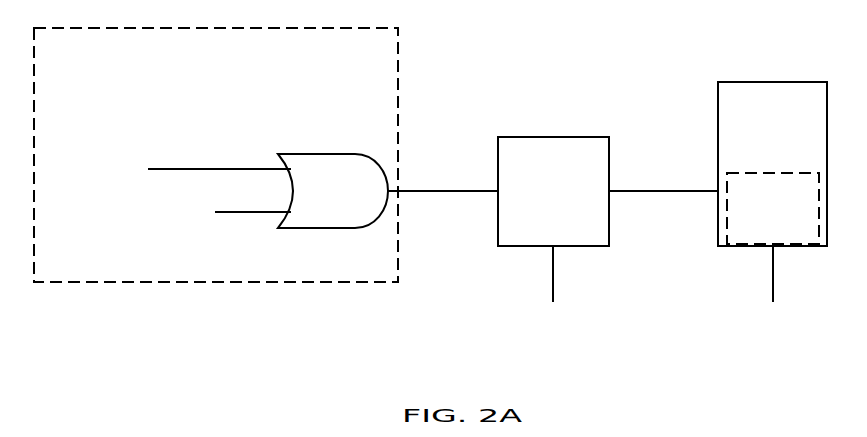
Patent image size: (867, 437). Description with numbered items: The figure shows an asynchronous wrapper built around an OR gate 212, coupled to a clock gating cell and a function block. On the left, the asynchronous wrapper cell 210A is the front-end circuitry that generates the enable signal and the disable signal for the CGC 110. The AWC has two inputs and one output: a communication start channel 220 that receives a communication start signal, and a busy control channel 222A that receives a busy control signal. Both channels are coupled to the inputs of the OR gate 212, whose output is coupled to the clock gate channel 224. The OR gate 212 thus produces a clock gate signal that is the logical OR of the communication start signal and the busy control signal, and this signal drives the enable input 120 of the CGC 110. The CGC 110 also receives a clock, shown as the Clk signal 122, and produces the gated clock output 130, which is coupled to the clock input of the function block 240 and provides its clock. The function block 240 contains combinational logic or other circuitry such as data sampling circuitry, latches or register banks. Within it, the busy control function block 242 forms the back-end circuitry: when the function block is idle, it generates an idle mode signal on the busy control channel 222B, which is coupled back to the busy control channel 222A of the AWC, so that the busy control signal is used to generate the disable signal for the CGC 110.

The asynchronous wrapper cell 210A is at (192, 102).
The communication start channel 220 is at (199, 172).
The busy control channel 222A is at (228, 208).
The OR gate 212 is at (316, 202).
The enable input 120 is at (443, 161).
The clock gate channel 224 is at (448, 220).
The clock gating cell 110 is at (536, 212).
The gated clock output 130 is at (663, 161).
The function block 240 is at (755, 149).
The busy control function block 242 is at (755, 231).
The clock signal 122 is at (553, 302).
The busy control channel 222B is at (773, 302).